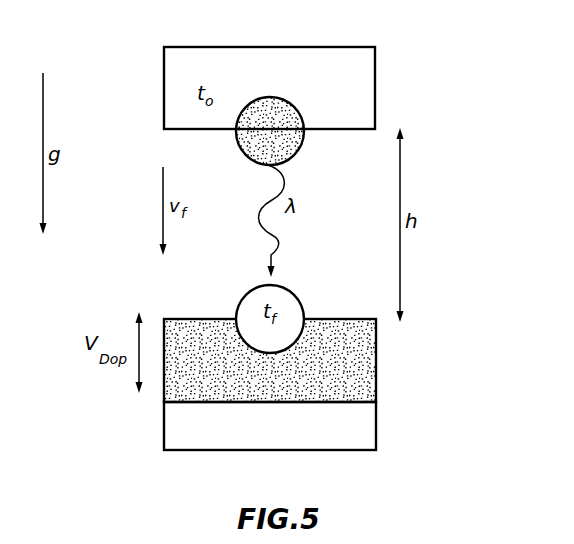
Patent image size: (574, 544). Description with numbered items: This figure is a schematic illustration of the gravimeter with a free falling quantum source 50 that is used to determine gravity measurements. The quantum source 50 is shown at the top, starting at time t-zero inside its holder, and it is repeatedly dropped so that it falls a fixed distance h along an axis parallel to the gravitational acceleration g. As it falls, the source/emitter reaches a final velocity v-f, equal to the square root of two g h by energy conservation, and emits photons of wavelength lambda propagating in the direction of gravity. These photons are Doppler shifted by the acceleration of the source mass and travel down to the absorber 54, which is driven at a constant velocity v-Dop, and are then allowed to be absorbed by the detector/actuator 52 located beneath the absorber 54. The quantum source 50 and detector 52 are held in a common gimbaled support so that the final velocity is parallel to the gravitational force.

The quantum source 50 is at (299, 94).
The absorber 54 is at (388, 357).
The detector/actuator 52 is at (327, 420).